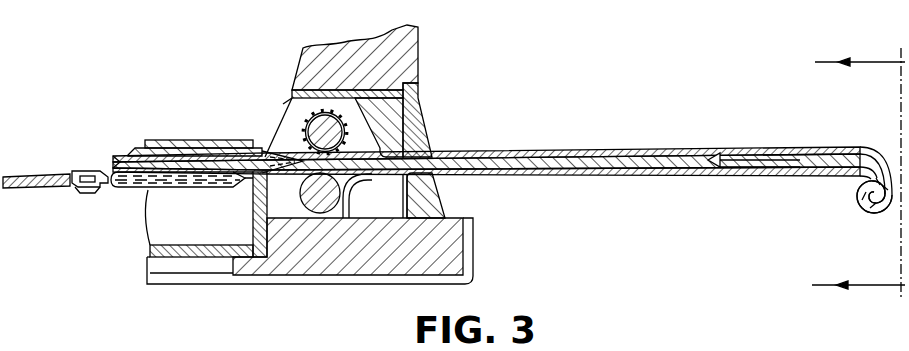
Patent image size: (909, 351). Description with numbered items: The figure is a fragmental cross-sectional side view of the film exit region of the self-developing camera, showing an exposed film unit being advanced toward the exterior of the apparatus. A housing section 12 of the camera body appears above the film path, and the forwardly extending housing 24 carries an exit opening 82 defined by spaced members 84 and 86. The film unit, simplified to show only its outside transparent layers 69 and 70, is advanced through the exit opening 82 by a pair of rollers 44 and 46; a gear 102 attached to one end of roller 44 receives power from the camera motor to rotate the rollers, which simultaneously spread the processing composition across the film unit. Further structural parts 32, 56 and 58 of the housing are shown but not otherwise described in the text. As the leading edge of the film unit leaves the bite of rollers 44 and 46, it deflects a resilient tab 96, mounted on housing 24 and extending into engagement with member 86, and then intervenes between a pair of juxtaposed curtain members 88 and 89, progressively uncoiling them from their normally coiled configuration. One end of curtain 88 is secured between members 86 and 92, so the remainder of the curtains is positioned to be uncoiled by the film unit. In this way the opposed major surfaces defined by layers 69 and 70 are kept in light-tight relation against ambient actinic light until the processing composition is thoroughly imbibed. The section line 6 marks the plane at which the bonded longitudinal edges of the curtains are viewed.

The housing section 12 is at (438, 70).
The housing 24 is at (482, 255).
The retainer plate 32 is at (190, 140).
The roller 44 is at (304, 130).
The roller 46 is at (306, 182).
The tube end 56 is at (248, 178).
The support wall 58 is at (253, 222).
The outside transparent layer 69 is at (640, 173).
The outside transparent layer 70 is at (627, 157).
The exit opening 82 is at (455, 184).
The member 84 is at (450, 211).
The member 86 is at (395, 128).
The curtain member 88 is at (864, 206).
The curtain member 89 is at (732, 182).
The member 92 is at (419, 110).
The resilient tab 96 is at (349, 200).
The gear 102 is at (300, 97).
The section line 6- 6 is at (858, 169).